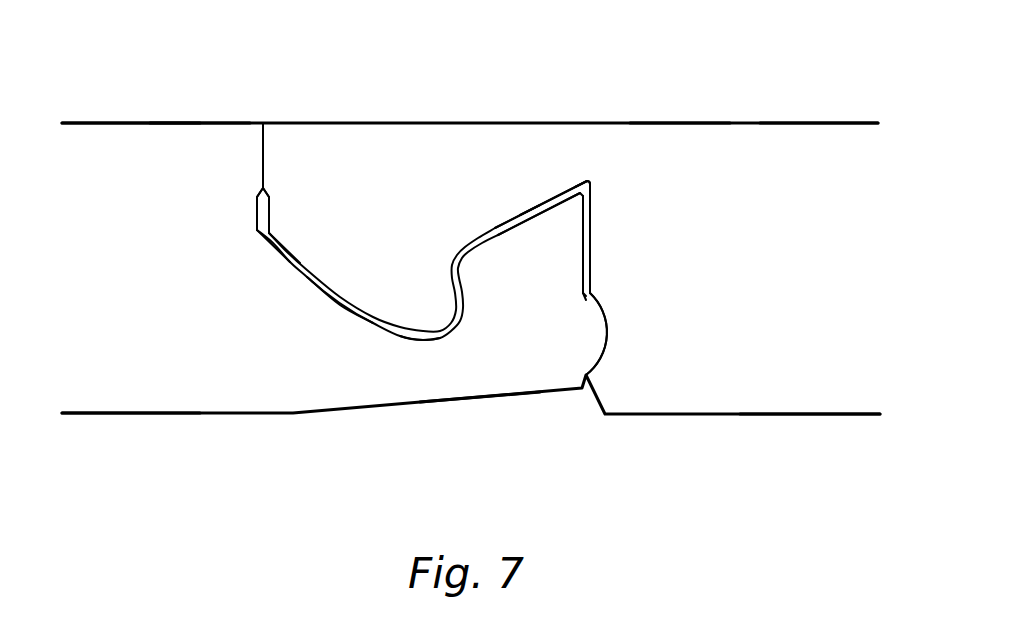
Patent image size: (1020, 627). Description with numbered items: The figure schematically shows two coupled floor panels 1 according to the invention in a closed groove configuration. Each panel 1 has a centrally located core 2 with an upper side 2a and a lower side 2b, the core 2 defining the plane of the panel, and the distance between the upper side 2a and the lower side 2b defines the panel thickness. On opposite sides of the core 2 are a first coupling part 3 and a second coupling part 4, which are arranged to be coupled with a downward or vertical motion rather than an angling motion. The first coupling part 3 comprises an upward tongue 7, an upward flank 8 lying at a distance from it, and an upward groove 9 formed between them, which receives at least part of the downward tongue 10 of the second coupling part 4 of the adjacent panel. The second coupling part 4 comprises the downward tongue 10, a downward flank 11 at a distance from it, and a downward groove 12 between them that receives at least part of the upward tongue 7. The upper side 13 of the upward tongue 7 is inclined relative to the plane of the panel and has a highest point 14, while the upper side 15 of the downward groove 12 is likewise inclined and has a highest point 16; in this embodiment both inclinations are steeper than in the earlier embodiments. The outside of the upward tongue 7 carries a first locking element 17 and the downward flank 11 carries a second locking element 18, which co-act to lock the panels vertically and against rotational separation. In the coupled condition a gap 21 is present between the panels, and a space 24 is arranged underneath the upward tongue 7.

The floor panel 1 is at (198, 116).
The core 2 is at (130, 273).
The upper side 2a is at (103, 123).
The lower side 2b is at (100, 414).
The first coupling part 3 is at (423, 420).
The second coupling part 4 is at (367, 116).
The upward tongue 7 is at (538, 333).
The upward flank 8 is at (270, 244).
The upward groove 9 is at (436, 332).
The downward tongue 10 is at (385, 284).
The downward flank 11 is at (590, 247).
The downward groove 12 is at (545, 202).
The upper side of the upward tongue 13 is at (510, 229).
The highest point of the upward tongue 14 is at (577, 198).
The upper side of the downward groove 15 is at (527, 207).
The highest point of the downward groove 16 is at (589, 182).
The first locking element 17 is at (583, 332).
The second locking element 18 is at (605, 318).
The gap 21 is at (262, 212).
The space 24 is at (478, 413).